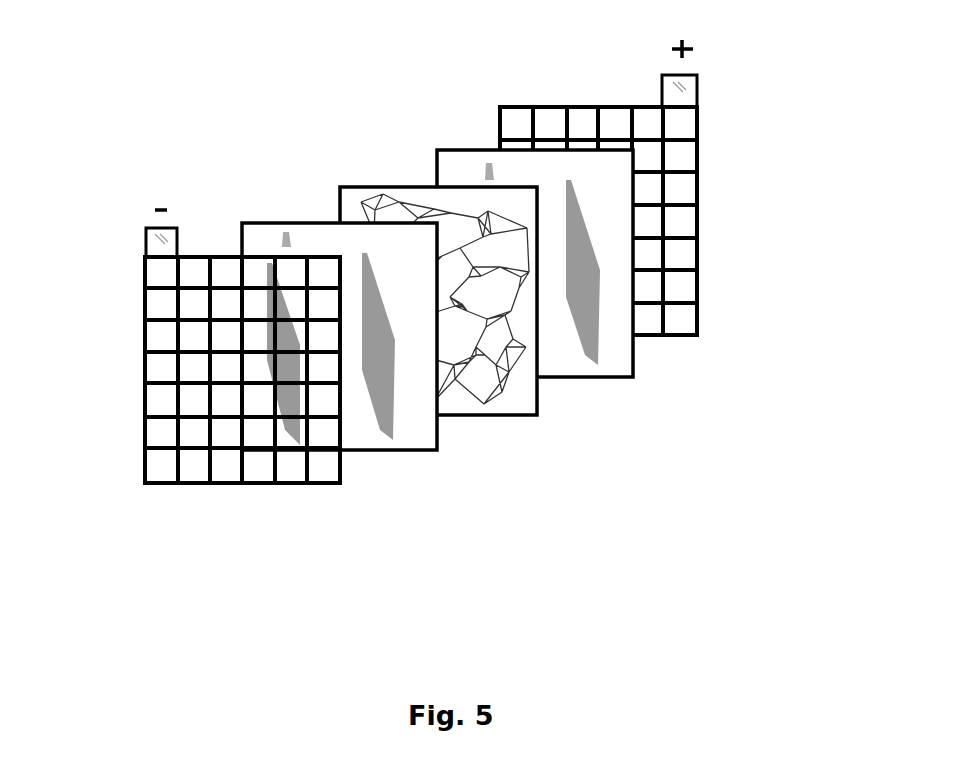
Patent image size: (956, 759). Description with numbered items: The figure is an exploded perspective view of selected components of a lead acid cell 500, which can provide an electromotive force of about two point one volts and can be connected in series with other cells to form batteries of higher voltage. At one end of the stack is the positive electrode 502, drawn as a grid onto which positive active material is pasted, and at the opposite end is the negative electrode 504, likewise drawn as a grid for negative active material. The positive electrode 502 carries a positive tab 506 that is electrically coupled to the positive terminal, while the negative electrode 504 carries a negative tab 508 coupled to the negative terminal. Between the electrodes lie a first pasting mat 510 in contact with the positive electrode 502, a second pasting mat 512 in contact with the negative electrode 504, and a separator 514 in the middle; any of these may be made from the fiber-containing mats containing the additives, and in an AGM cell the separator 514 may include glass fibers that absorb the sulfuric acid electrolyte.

The lead acid cell 500 is at (757, 120).
The positive electrode 502 is at (698, 283).
The negative electrode 504 is at (212, 483).
The positive tab 506 is at (660, 87).
The negative tab 508 is at (145, 243).
The first pasting mat 510 is at (633, 363).
The second pasting mat 512 is at (388, 450).
The separator 514 is at (485, 415).